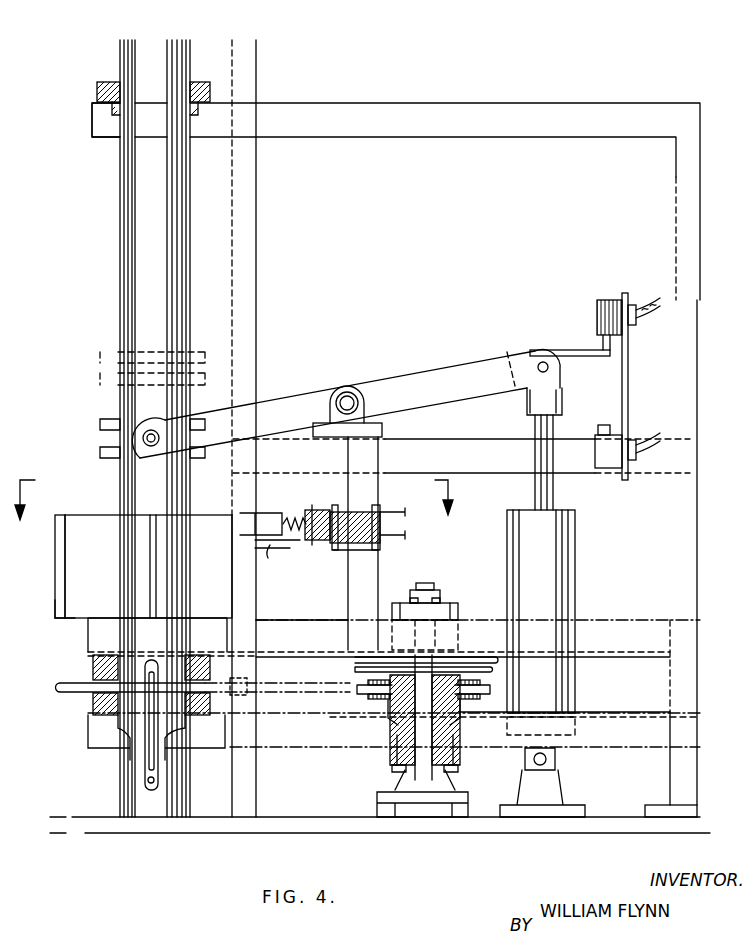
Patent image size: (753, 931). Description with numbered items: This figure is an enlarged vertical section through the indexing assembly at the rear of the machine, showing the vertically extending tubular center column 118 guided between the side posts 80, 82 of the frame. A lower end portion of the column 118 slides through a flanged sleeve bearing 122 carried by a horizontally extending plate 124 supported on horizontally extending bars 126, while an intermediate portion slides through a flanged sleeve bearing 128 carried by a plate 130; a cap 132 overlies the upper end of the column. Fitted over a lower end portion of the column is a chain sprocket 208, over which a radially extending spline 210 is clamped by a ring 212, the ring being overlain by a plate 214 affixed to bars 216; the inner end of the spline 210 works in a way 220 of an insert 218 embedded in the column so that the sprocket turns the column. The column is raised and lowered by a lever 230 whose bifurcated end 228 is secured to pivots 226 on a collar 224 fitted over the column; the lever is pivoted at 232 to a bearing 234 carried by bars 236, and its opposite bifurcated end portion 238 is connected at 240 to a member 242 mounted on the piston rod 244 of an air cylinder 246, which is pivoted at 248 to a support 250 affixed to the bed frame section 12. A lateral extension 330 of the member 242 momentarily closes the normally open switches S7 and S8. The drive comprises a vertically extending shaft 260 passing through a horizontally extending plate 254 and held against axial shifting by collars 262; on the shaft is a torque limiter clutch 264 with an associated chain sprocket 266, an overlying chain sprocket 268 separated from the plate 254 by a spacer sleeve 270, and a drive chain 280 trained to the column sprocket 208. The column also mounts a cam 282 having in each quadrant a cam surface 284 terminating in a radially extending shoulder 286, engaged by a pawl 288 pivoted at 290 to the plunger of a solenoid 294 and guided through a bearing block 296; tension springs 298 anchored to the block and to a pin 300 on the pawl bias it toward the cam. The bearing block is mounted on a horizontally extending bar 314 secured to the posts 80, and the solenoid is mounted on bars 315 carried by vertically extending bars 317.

The bed frame section 12 is at (593, 843).
The side post 80 is at (233, 492).
The side post 82 is at (697, 700).
The tubular center column 118 is at (118, 272).
The flanged sleeve bearing 122 is at (93, 700).
The horizontally extending plate 124 is at (93, 715).
The horizontally extending bars 126 is at (275, 740).
The flanged sleeve bearing 128 is at (97, 84).
The horizontally extending plate 130 is at (92, 97).
The cap 132 is at (372, 128).
The chain sprocket 208 is at (62, 683).
The radially extending spline 210 is at (150, 662).
The ring 212 is at (200, 680).
The plate 214 is at (206, 660).
The horizontally extending bars 216 is at (318, 632).
The insert 218 is at (148, 778).
The way 220 is at (150, 760).
The collar 224 is at (100, 423).
The pivots 226 is at (151, 448).
The bifurcated end 228 is at (213, 410).
The lever 230 is at (426, 378).
The pivot 232 is at (352, 388).
The bearing 234 is at (384, 430).
The horizontally extending bars 236 is at (468, 472).
The opposite end portion 238 is at (512, 360).
The connection 240 is at (543, 362).
The member 242 is at (560, 400).
The piston rod 244 is at (554, 492).
The air cylinder 246 is at (568, 598).
The pivot 248 is at (548, 764).
The support 250 is at (552, 793).
The horizontally extending plate 254 is at (455, 605).
The vertically extending shaft 260 is at (432, 590).
The collars 262 is at (410, 598).
The torque limiter clutch 264 is at (380, 735).
The chain sprocket 266 is at (488, 685).
The chain sprocket 268 is at (490, 657).
The spacer sleeve 270 is at (355, 667).
The drive chain 280 is at (300, 692).
The cam 282 is at (56, 595).
The cam surface 284 is at (82, 560).
The radially extending shoulder 286 is at (57, 612).
The pawl 288 is at (280, 520).
The pivot 290 is at (335, 512).
The solenoid 294 is at (338, 552).
The bearing block 296 is at (262, 512).
The tension springs 298 is at (313, 505).
The pin 300 is at (318, 540).
The horizontally extending bar 314 is at (280, 548).
The horizontally extending bars 315 is at (400, 512).
The vertically extending bars 317 is at (350, 588).
The lateral extension 330 is at (580, 347).
The switch S7 is at (606, 300).
The switch S8 is at (615, 448).